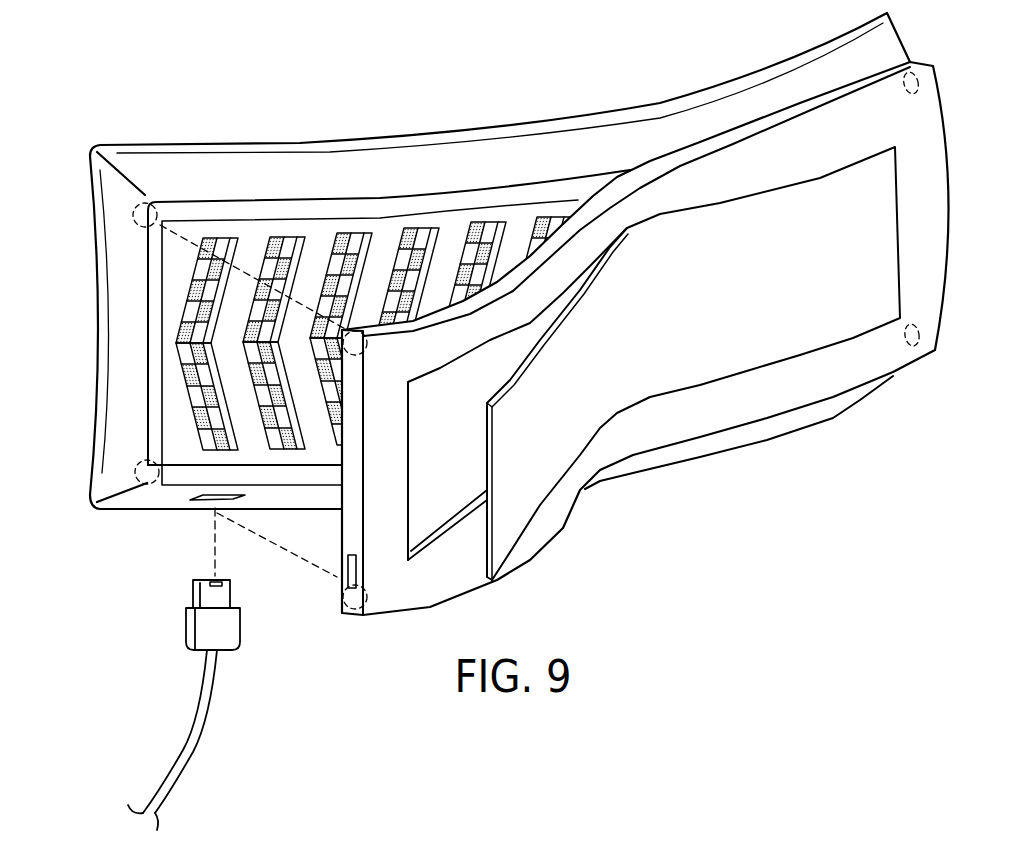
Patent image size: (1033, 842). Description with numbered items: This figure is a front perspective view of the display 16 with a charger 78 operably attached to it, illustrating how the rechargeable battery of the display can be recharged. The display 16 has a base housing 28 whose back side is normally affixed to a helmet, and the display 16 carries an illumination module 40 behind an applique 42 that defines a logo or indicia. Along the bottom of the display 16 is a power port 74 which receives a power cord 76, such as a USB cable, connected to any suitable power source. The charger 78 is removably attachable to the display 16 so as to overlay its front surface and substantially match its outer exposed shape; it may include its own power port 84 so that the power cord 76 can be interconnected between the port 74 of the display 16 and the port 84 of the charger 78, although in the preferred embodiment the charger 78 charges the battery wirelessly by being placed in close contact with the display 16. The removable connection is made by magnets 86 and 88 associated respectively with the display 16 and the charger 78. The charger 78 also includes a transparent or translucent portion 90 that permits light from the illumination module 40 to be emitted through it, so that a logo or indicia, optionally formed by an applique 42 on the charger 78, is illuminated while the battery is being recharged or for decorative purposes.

The display 16 is at (233, 75).
The base housing 28 is at (160, 167).
The illumination module 40 is at (310, 333).
The applique 42 is at (177, 280).
The power port 74 is at (210, 500).
The power cord 76 is at (190, 627).
The charger 78 is at (758, 407).
The power port 84 is at (340, 577).
The magnet 86 is at (133, 216).
The magnet 88 is at (383, 325).
The transparent or translucent portion 90 is at (518, 527).